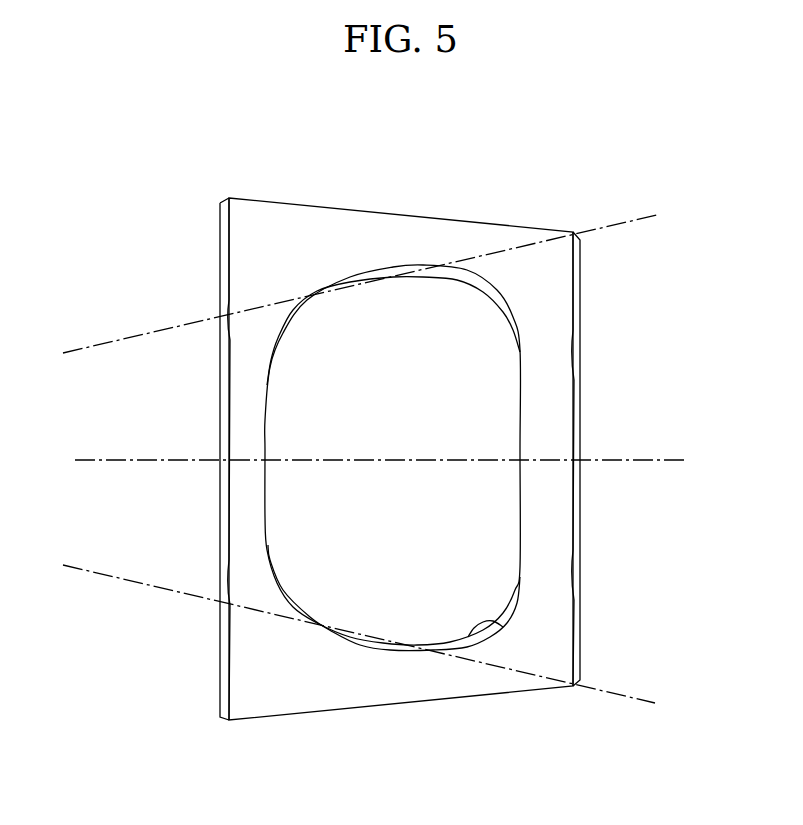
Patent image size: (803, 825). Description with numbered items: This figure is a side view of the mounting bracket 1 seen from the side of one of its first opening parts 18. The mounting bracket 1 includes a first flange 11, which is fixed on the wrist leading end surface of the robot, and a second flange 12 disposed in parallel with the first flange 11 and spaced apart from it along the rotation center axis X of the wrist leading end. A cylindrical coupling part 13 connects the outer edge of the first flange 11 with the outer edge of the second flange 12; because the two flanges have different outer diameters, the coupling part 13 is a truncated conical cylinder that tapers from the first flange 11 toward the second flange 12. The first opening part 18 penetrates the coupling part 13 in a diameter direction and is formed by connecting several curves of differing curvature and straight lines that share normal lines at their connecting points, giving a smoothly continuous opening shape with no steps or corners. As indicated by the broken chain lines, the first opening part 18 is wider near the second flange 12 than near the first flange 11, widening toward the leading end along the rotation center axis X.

The mounting bracket 1 is at (371, 408).
The first flange 11 is at (208, 398).
The second flange 12 is at (592, 386).
The coupling part 13 is at (287, 242).
The first opening part 18 is at (498, 622).